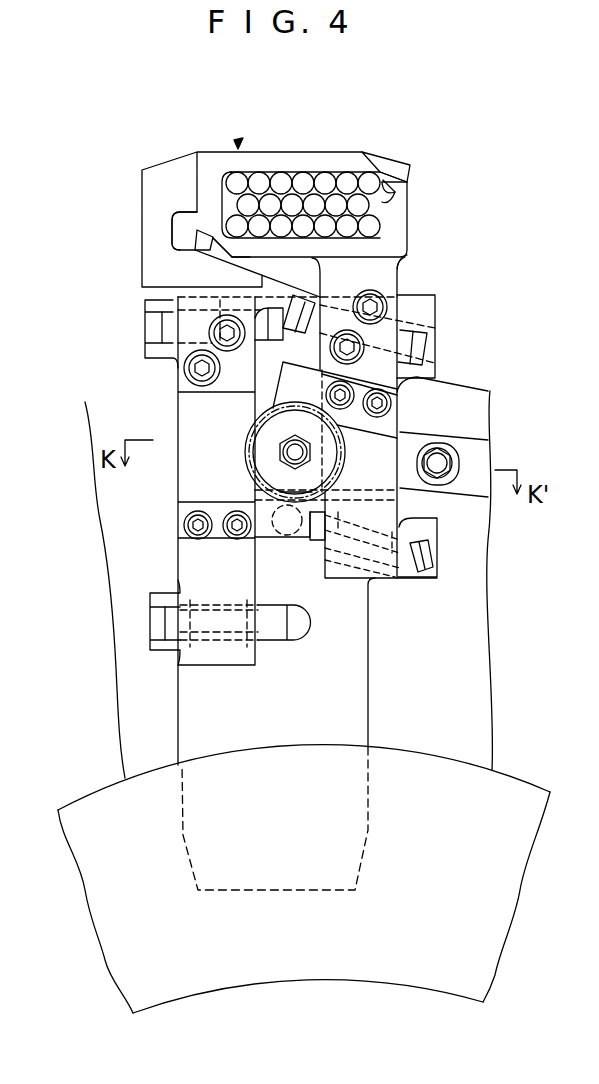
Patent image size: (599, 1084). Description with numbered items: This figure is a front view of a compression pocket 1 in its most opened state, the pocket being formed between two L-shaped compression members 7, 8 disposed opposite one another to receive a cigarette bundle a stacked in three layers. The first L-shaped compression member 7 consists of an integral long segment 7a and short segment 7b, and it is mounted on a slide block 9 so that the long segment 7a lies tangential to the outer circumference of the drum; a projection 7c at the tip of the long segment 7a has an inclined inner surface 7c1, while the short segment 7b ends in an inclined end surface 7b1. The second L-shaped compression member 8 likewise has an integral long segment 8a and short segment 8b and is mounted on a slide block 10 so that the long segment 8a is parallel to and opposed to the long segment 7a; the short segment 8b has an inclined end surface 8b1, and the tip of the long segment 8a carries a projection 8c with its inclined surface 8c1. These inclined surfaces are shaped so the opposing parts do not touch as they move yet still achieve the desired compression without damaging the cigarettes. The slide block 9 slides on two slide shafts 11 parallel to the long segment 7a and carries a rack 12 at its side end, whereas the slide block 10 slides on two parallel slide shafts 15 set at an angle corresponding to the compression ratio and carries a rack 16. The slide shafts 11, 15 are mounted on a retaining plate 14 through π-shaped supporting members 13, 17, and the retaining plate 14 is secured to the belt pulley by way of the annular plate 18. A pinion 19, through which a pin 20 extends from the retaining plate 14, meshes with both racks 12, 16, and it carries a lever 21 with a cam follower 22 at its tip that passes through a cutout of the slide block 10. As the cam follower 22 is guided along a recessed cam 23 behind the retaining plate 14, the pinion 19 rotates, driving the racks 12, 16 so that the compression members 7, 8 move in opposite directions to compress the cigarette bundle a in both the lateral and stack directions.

The compression pocket 1 is at (240, 148).
The L-shaped compression member 7 is at (217, 160).
The long segment 7a is at (318, 157).
The short segment 7b is at (207, 221).
The inclined end surface 7b1 is at (200, 242).
The projection 7c is at (397, 167).
The inclined inner surface 7c1 is at (390, 177).
The L-shaped compression member 8 is at (400, 230).
The long segment 8a is at (408, 260).
The short segment 8b is at (395, 190).
The inclined end surface 8b1 is at (385, 197).
The projection 8c is at (222, 248).
The lower edge corner 8c1 is at (245, 262).
The cigarette bundle a is at (303, 178).
The slide block 9 is at (190, 402).
The slide block 10 is at (400, 492).
The slide shafts 11 is at (163, 322).
The rack 12 is at (265, 505).
The π-shaped supporting member 13 is at (150, 333).
The retaining plate 14 is at (337, 660).
The slide shafts 15 is at (400, 335).
The rack 16 is at (350, 417).
The π-shaped supporting member 17 is at (410, 343).
The annular plate 18 is at (513, 798).
The pinion 19 is at (250, 440).
The pin 20 is at (287, 453).
The lever 21 is at (410, 443).
The cam follower 22 is at (463, 458).
The recessed cam 23 is at (473, 403).